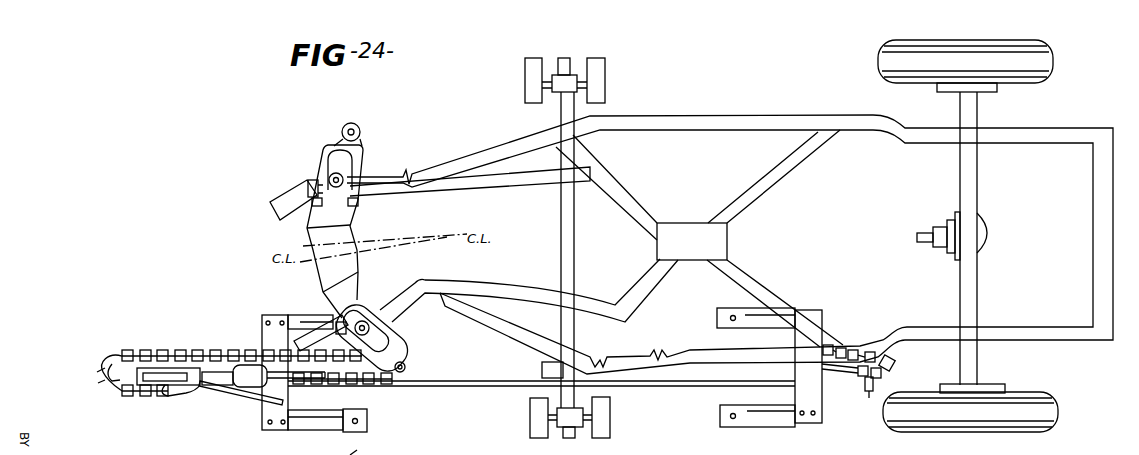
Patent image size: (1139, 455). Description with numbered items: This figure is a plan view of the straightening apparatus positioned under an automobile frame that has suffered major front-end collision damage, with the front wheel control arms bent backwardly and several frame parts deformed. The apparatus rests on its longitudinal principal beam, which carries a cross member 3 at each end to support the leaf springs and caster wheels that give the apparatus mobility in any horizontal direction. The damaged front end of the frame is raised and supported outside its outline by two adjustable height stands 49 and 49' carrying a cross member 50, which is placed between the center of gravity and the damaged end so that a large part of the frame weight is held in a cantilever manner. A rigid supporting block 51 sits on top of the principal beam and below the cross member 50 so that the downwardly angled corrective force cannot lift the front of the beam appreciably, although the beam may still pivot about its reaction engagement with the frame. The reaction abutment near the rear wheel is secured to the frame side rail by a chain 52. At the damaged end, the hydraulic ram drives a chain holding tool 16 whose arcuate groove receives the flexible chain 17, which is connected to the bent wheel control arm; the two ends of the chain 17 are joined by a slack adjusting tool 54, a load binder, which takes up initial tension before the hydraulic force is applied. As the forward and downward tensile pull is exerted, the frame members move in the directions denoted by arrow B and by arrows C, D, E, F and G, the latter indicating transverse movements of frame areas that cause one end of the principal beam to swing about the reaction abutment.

The cross member 3 is at (262, 328).
The chain holding tool 16 is at (113, 358).
The flexible chain 17 is at (212, 350).
The adjustable height stand 49 is at (545, 417).
The adjustable height stand 49' is at (539, 80).
The cross member 50 is at (568, 208).
The rigid supporting block 51 is at (542, 368).
The chain 52 is at (864, 349).
The slack adjusting tool 54 is at (200, 388).
The arrow B is at (427, 388).
The arrow C is at (425, 276).
The arrow D is at (523, 277).
The arrow E is at (603, 357).
The arrow F is at (651, 346).
The arrow G is at (615, 303).